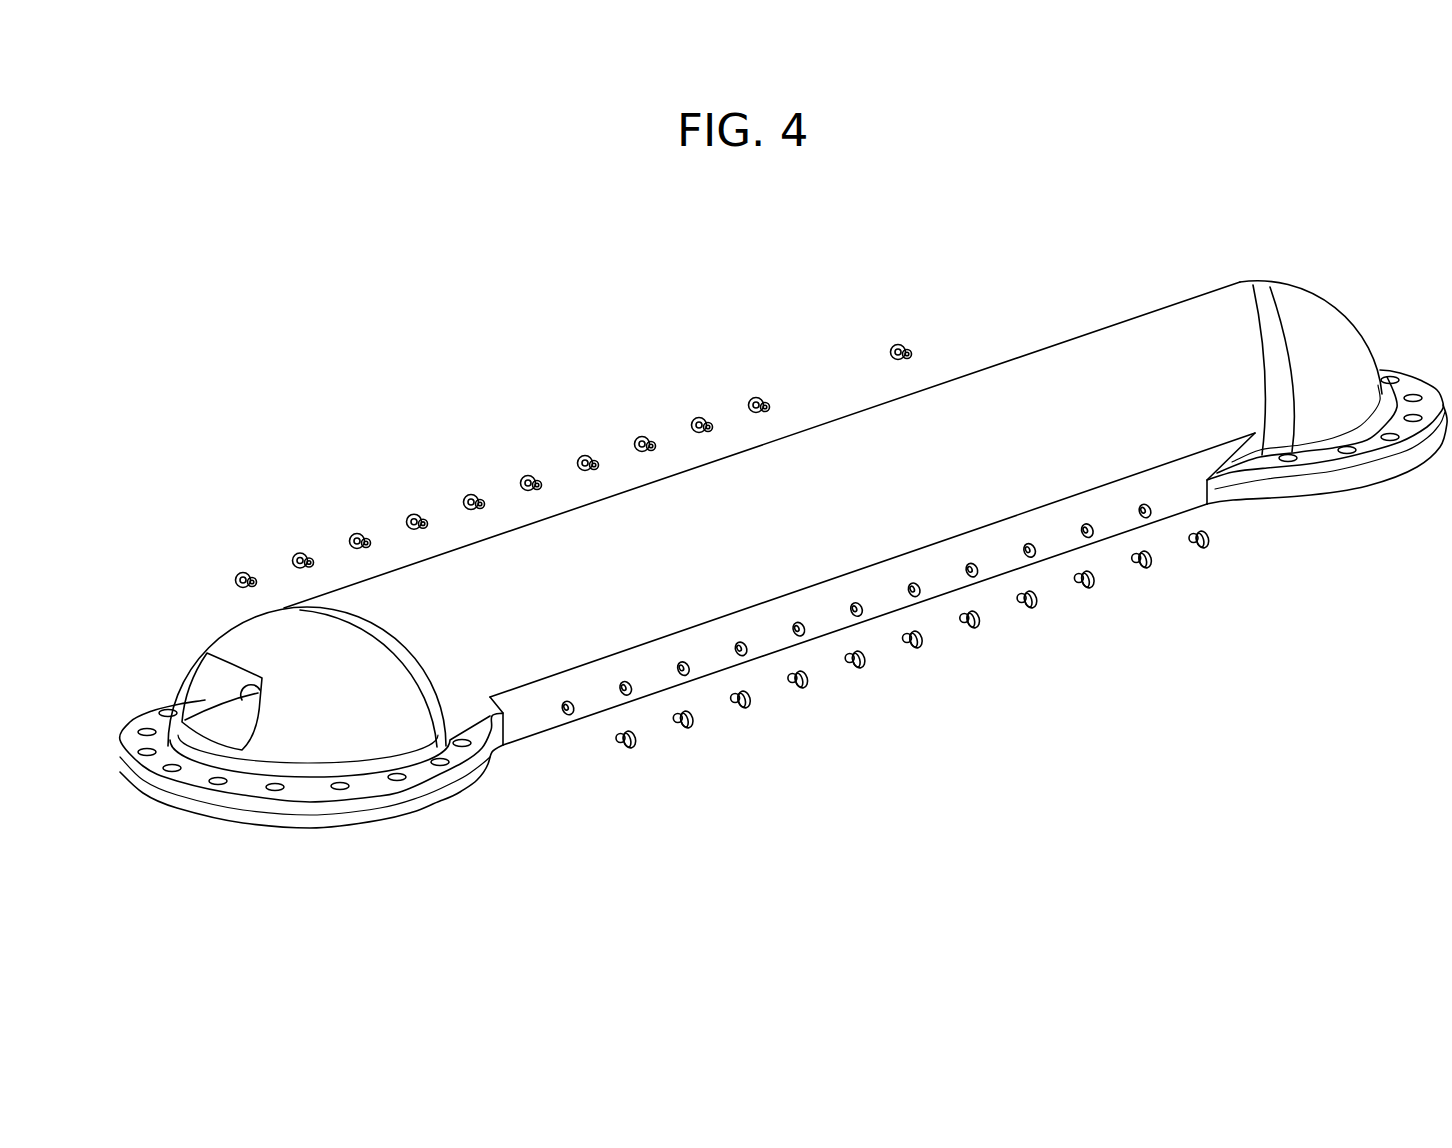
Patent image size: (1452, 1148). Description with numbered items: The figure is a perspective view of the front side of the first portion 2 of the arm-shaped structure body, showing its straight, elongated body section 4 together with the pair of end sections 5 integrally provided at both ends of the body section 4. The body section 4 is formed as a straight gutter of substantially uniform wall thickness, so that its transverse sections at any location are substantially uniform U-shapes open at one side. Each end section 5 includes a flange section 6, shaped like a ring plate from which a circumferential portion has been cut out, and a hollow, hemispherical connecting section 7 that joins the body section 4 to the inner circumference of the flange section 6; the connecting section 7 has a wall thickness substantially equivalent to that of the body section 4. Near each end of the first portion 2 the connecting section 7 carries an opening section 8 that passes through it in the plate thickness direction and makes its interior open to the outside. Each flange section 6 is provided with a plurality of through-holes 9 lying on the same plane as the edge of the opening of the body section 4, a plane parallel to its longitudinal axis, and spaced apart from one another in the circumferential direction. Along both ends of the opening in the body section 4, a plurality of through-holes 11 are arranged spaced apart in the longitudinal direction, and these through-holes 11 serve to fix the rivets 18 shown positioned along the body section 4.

The first portion 2 is at (803, 376).
The body section 4 is at (985, 407).
The end section 5 is at (212, 622).
The flange section 6 is at (422, 797).
The connecting section 7 is at (268, 642).
The opening section 8 is at (254, 699).
The through-hole 9 is at (320, 786).
The through-hole 11 is at (574, 713).
The rivet 18 is at (470, 496).